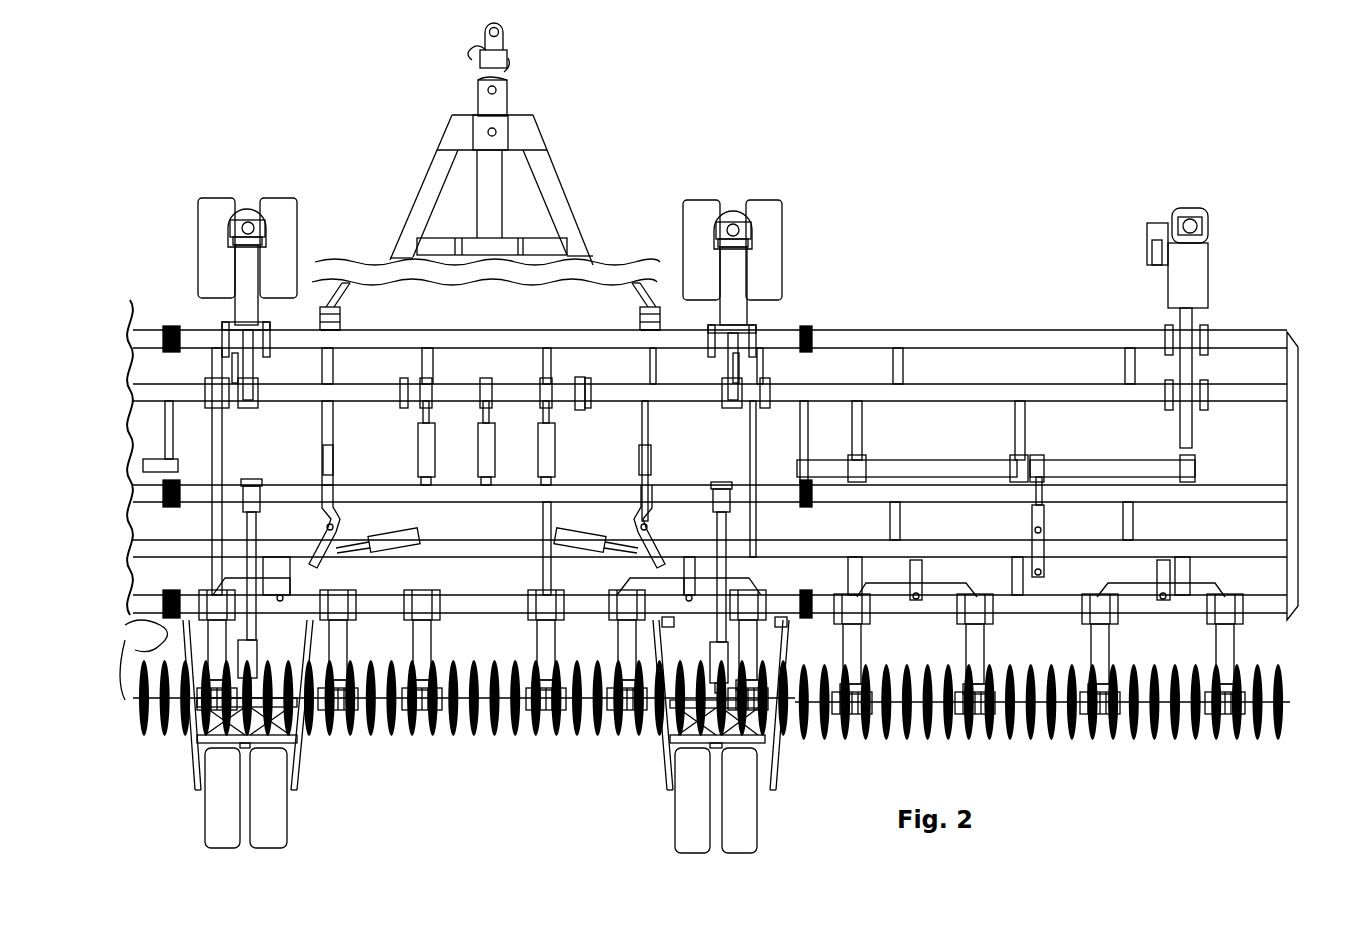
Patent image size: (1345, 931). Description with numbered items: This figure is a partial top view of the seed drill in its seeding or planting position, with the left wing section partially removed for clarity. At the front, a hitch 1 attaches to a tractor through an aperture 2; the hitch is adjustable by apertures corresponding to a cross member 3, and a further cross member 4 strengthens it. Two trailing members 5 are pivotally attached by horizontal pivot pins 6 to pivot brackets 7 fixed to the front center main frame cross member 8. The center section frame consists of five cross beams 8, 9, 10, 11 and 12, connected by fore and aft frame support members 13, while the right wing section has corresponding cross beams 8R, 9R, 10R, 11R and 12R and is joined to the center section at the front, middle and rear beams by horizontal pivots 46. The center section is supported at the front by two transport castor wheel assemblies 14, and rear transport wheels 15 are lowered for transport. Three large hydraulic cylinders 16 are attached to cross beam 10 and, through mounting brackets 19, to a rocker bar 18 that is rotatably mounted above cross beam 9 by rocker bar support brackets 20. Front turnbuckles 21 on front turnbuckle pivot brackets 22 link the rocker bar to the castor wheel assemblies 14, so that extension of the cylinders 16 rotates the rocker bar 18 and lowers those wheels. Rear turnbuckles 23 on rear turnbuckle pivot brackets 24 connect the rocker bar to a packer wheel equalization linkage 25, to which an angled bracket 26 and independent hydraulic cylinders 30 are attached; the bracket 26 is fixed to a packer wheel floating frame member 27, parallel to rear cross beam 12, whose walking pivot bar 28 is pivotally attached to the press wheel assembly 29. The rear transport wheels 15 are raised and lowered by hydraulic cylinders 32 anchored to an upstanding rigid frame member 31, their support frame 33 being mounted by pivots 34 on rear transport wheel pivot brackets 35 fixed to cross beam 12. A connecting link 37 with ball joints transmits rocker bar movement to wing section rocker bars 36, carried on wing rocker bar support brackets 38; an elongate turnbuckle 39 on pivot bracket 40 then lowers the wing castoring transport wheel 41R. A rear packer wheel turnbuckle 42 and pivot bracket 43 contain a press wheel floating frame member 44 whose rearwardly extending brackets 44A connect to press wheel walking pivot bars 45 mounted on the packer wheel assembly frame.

The hitch 1 is at (508, 90).
The aperture 2 is at (500, 24).
The cross member 3 is at (508, 130).
The cross member 4 is at (540, 245).
The trailing members 5 is at (428, 197).
The horizontal pivot pins 6 is at (343, 310).
The pivot brackets 7 is at (342, 328).
The front center main frame cross member 8 is at (488, 330).
The right section cross beam 8R is at (1275, 338).
The cross member 9 is at (436, 410).
The right section cross beam 9R is at (1265, 400).
The cross member 10 is at (440, 438).
The right section cross beam 10R is at (1225, 490).
The cross member 11 is at (482, 540).
The right section cross beam 11R is at (1245, 550).
The rear cross beam 12 is at (472, 600).
The right section cross beam 12R is at (1262, 608).
The fore and aft frame support members 13 is at (336, 373).
The transport castor wheel assemblies 14 is at (241, 185).
The rear transport wheels 15 is at (300, 832).
The hydraulic cylinders 16 is at (426, 440).
The rocker bar 18 is at (389, 386).
The rocker bar center section hydraulic cylinder mounting brackets 19 is at (528, 386).
The rocker bar support brackets 20 is at (212, 402).
The front adjustable elongate turnbuckles 21 is at (215, 340).
The rocker bar front turnbuckle pivot brackets 22 is at (269, 372).
The rear turnbuckles 23 is at (322, 450).
The rocker bar rear turnbuckle pivot brackets 24 is at (283, 404).
The packer wheel equalization linkage 25 is at (345, 533).
The equalization linkage/angled bracket 26 is at (316, 535).
The packer wheel floating frame member 27 is at (440, 591).
The walking pivot bar 28 is at (342, 585).
The press wheel assembly 29 is at (352, 668).
The independent hydraulic cylinders 30 is at (570, 528).
The upstanding rigid frame member 31 is at (240, 525).
The hydraulic cylinders 32 is at (187, 645).
The support frame 33 is at (305, 748).
The pivots 34 is at (220, 650).
The rear transport wheel pivot brackets 35 is at (672, 618).
The wing section rocker bars 36 is at (940, 460).
The connecting link 37 is at (168, 425).
The wing rocker bar support brackets 38 is at (867, 467).
The elongate turnbuckle 39 is at (1180, 414).
The pivot bracket 40 is at (1162, 462).
The castoring transport wheel 41R is at (1210, 227).
The rear wing section packer wheel turnbuckle 42 is at (1045, 507).
The wing section rocker bar rear turnbuckle pivot bracket 43 is at (1048, 464).
The press wheel floating frame member 44 is at (1032, 534).
The rearwardly extending brackets 44A is at (920, 560).
The press wheel walking pivot bars 45 is at (955, 620).
The horizontal pivots 46 is at (172, 326).